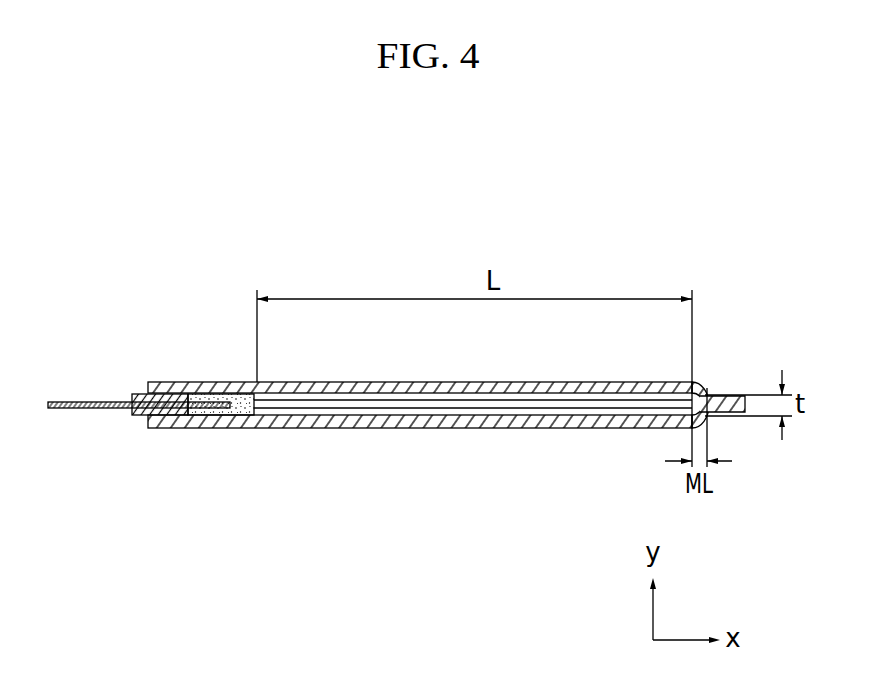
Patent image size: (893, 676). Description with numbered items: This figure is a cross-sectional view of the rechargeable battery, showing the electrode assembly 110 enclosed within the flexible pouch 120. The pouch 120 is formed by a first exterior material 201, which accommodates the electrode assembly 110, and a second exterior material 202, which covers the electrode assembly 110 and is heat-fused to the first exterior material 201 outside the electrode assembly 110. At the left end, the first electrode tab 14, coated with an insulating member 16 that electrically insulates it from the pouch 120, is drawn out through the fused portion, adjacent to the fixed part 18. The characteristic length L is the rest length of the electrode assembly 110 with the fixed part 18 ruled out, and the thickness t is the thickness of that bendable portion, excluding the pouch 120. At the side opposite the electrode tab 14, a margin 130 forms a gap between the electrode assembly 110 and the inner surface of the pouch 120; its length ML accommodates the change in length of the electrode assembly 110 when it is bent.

The first electrode tab 14 is at (69, 409).
The insulating member 16 is at (136, 416).
The fixed part 18 is at (232, 428).
The electrode assembly 110 is at (548, 420).
The pouch 120 is at (420, 478).
The first exterior material 201 is at (468, 528).
The second exterior material 202 is at (447, 386).
The margin 130 is at (697, 382).